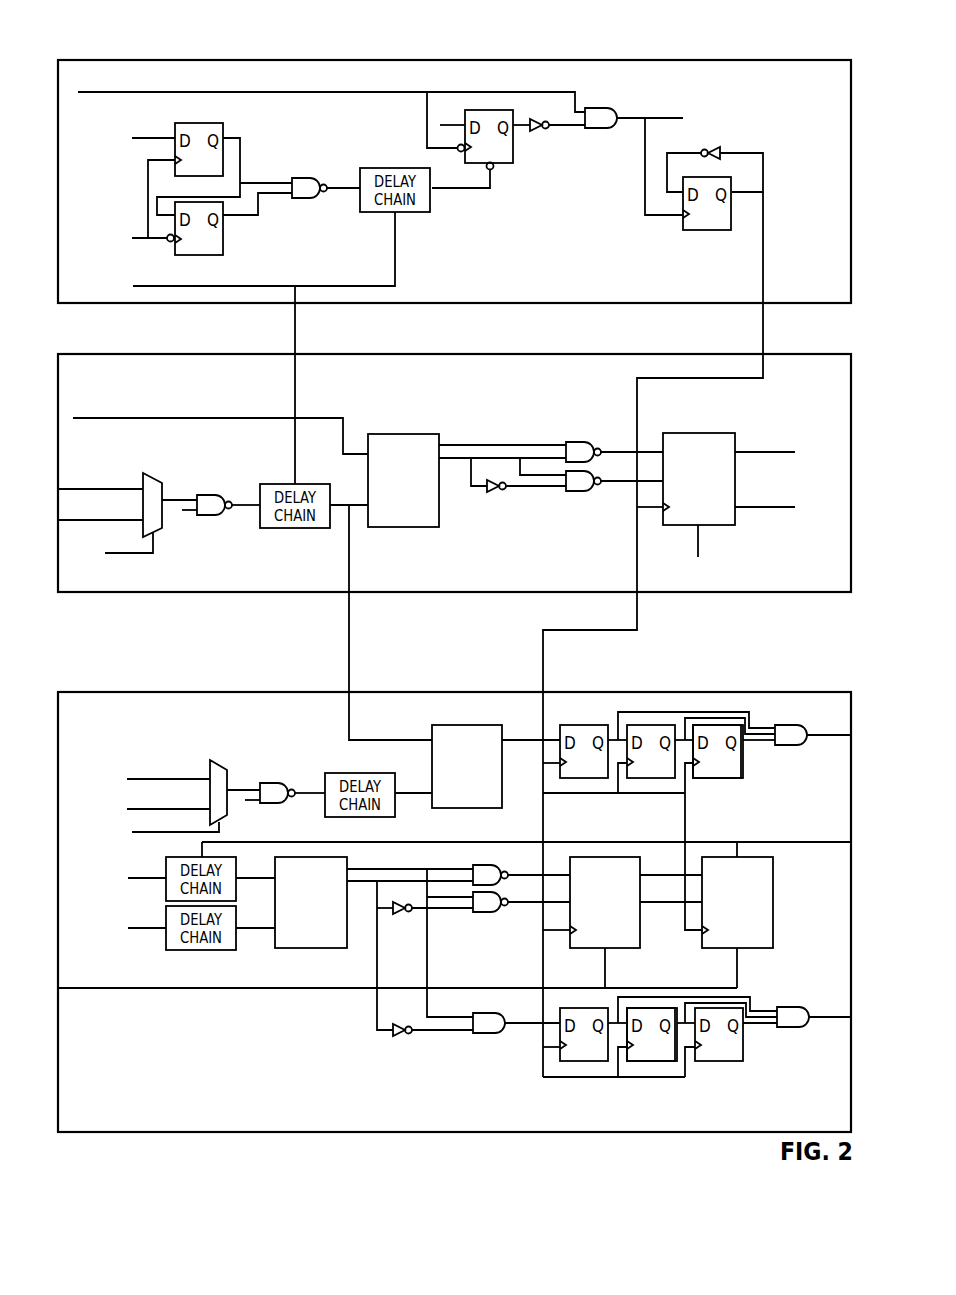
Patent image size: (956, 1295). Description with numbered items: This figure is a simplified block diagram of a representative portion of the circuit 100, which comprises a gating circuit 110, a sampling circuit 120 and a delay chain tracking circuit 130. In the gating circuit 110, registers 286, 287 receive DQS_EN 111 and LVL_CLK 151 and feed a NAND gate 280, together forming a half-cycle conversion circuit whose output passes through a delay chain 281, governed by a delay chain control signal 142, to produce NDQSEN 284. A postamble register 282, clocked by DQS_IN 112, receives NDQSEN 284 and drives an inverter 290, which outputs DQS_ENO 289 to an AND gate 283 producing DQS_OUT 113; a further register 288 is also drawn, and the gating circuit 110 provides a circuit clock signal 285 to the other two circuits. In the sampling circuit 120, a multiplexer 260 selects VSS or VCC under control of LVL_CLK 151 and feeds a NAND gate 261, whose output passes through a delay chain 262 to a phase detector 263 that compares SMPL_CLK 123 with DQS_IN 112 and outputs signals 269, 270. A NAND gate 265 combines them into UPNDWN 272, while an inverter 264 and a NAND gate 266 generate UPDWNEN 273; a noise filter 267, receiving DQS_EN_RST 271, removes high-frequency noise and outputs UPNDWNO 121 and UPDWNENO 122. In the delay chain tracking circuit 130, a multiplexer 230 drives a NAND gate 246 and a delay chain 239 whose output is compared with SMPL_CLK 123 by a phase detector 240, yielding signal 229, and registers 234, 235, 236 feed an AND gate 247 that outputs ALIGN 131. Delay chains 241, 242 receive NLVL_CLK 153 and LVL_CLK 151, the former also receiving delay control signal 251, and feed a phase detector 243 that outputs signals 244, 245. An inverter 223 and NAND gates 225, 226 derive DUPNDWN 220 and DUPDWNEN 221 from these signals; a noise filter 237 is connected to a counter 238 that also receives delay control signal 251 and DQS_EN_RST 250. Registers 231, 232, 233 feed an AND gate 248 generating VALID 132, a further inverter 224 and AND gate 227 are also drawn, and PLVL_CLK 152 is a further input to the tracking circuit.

The circuit 100 is at (114, 40).
The gating circuit 110 is at (795, 60).
The DQS_EN input signal 111 is at (150, 138).
The DQS_IN input signal 112 is at (138, 92).
The DQS_OUT output signal 113 is at (668, 118).
The sampling circuit 120 is at (793, 355).
The UPNDWNO signal 121 is at (768, 452).
The UPDWNENO signal 122 is at (768, 507).
The SMPL_CLK signal 123 is at (353, 560).
The delay chain tracking circuit 130 is at (793, 692).
The ALIGN signal 131 is at (827, 737).
The VALID signal 132 is at (828, 1022).
The delay chain control signal 142 is at (166, 286).
The LVL_CLK signal 151 is at (142, 238).
The PLVL_CLK signal 152 is at (148, 878).
The NLVL_CLK signal 153 is at (134, 832).
The DUPNDWN signal 220 is at (553, 874).
The DUPDWNEN signal 221 is at (553, 904).
The inverter 223 is at (398, 916).
The inverter 224 is at (398, 1038).
The NAND gate 225 is at (485, 865).
The NAND gate 226 is at (485, 913).
The AND gate 227 is at (482, 1034).
The SMPLO2 signal 229 is at (514, 740).
The multiplexer 230 is at (222, 762).
The register 231 is at (590, 1060).
The register 232 is at (660, 1061).
The register 233 is at (718, 1061).
The register 234 is at (585, 725).
The register 235 is at (652, 725).
The register 236 is at (718, 725).
The noise filter 237 is at (615, 857).
The counter 238 is at (745, 948).
The delay chain 239 is at (362, 773).
The phase detector 240 is at (448, 725).
The delay chain 241 is at (196, 857).
The delay chain 242 is at (203, 950).
The phase detector 243 is at (300, 948).
The SMPLO2 signal 244 is at (410, 869).
The SMPLO1 signal 245 is at (378, 903).
The NAND gate 246 is at (278, 783).
The AND gate 247 is at (780, 747).
The AND gate 248 is at (790, 1030).
The DQS_EN_RST signal 250 is at (90, 990).
The delay control signal 251 is at (820, 843).
The multiplexer 260 is at (157, 472).
The NAND gate 261 is at (205, 495).
The delay chain 262 is at (292, 527).
The phase detector 263 is at (392, 434).
The inverter 264 is at (492, 494).
The NAND gate 265 is at (578, 442).
The NAND gate 266 is at (572, 492).
The noise filter 267 is at (710, 433).
The SMPLO2 signal 269 is at (465, 445).
The SMPLO1 signal 270 is at (490, 458).
The DQS_EN_RST signal 271 is at (700, 557).
The UPNDWN signal 272 is at (640, 452).
The UPDWNEN signal 273 is at (622, 483).
The NAND gate 280 is at (305, 178).
The delay chain 281 is at (418, 213).
The postamble register 282 is at (497, 170).
The AND gate 283 is at (603, 108).
The NDQSEN signal 284 is at (462, 190).
The circuit clock signal 285 is at (764, 255).
The register 286 is at (205, 124).
The register 287 is at (206, 253).
The register 288 is at (706, 231).
The DQS_ENO signal 289 is at (577, 127).
The inverter 290 is at (541, 132).